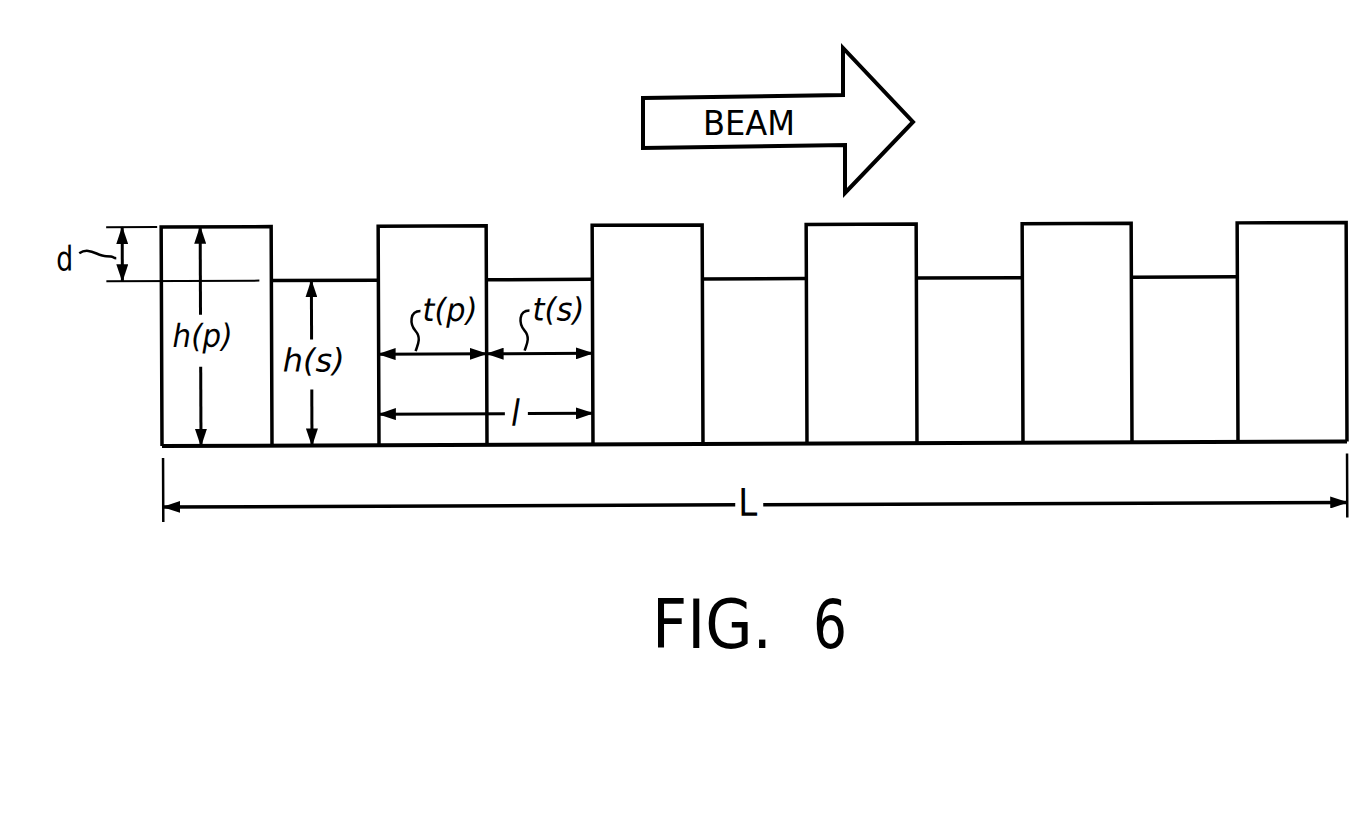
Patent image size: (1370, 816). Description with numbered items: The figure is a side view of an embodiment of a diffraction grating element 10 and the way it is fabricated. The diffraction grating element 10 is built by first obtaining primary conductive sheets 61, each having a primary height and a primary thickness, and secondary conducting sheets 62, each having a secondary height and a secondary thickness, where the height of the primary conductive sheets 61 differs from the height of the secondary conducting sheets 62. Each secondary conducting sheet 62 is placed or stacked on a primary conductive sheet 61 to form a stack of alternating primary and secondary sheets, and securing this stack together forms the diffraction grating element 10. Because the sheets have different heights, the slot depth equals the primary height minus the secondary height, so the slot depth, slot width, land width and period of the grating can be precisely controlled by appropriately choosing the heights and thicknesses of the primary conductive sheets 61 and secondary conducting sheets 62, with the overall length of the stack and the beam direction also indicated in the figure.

The diffraction grating element 10 is at (754, 304).
The primary conductive sheet 61 is at (214, 227).
The secondary conducting sheet 62 is at (339, 281).